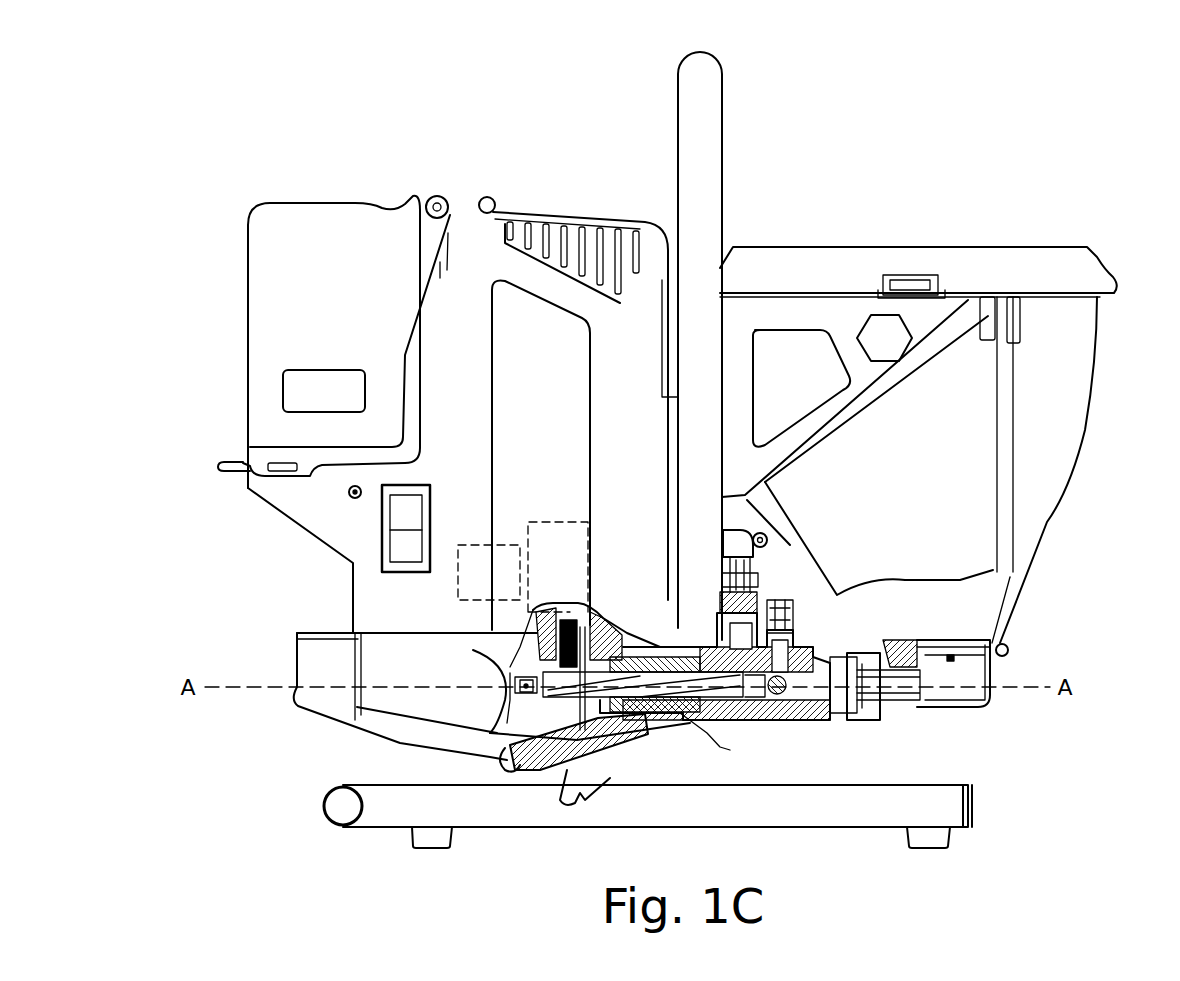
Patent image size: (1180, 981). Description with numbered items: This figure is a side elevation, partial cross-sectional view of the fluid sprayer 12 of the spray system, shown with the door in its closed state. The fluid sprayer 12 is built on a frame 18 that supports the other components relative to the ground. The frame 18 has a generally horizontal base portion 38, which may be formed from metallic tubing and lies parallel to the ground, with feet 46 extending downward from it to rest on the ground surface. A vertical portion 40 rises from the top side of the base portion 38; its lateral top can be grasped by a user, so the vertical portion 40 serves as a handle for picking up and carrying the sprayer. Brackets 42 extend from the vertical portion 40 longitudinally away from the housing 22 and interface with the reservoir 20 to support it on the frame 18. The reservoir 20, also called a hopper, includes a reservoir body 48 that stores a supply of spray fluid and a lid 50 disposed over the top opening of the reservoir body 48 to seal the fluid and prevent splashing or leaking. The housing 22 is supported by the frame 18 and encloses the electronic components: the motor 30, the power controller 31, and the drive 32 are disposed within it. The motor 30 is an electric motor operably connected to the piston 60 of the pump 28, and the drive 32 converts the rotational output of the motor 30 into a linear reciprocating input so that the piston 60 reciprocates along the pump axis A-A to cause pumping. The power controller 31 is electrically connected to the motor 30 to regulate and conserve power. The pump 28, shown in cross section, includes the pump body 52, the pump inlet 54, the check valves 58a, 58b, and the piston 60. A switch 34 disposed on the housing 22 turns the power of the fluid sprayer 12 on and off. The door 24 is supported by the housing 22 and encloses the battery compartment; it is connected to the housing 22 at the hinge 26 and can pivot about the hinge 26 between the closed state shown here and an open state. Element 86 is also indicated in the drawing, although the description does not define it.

The fluid sprayer 12 is at (822, 152).
The frame 18 is at (655, 90).
The reservoir 20 is at (1112, 396).
The housing 22 is at (489, 216).
The door 24 is at (331, 193).
The hinge 26 is at (443, 188).
The pump 28 is at (752, 750).
The motor 30 is at (554, 518).
The power controller 31 is at (470, 543).
The drive 32 is at (503, 672).
The switch 34 is at (410, 535).
The base portion 38 is at (802, 818).
The vertical portion 40 is at (710, 100).
The brackets 42 is at (957, 310).
The feet 46 is at (432, 840).
The reservoir body 48 is at (1045, 453).
The lid 50 is at (1058, 258).
The pump body 52 is at (782, 712).
The pump inlet 54 is at (907, 707).
The check valve 58a is at (856, 703).
The check valve 58b is at (688, 640).
The piston 60 is at (707, 685).
The relief fitting 86 is at (787, 538).